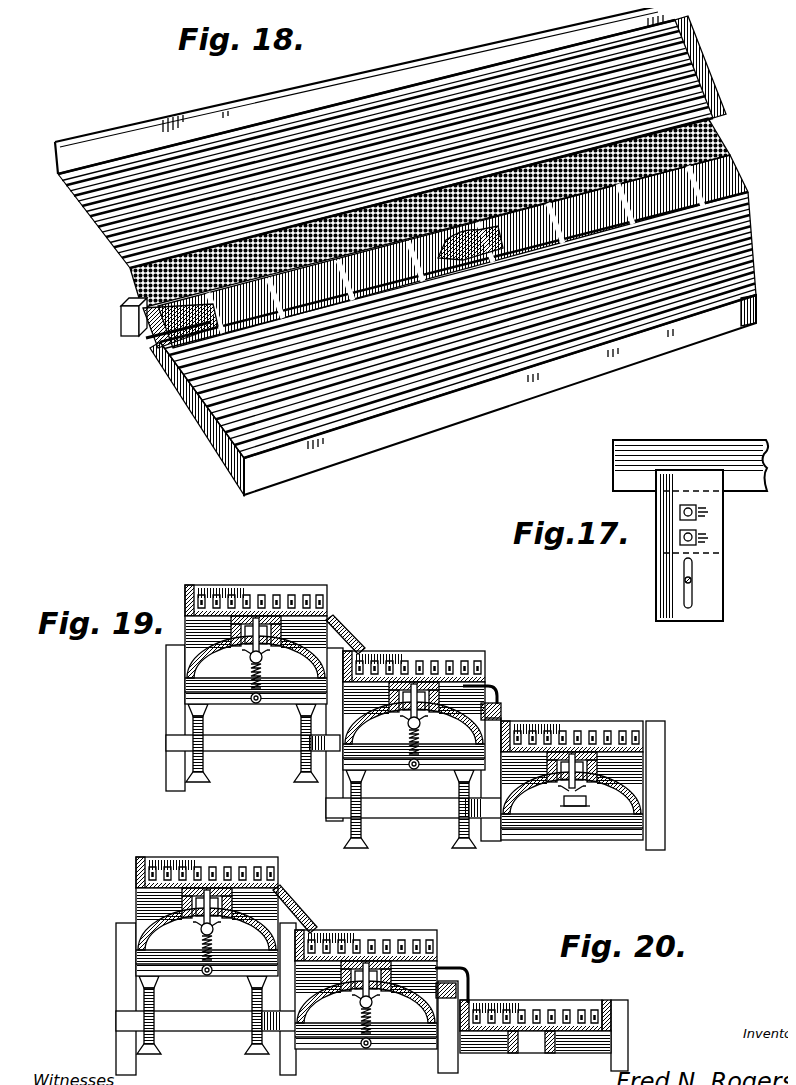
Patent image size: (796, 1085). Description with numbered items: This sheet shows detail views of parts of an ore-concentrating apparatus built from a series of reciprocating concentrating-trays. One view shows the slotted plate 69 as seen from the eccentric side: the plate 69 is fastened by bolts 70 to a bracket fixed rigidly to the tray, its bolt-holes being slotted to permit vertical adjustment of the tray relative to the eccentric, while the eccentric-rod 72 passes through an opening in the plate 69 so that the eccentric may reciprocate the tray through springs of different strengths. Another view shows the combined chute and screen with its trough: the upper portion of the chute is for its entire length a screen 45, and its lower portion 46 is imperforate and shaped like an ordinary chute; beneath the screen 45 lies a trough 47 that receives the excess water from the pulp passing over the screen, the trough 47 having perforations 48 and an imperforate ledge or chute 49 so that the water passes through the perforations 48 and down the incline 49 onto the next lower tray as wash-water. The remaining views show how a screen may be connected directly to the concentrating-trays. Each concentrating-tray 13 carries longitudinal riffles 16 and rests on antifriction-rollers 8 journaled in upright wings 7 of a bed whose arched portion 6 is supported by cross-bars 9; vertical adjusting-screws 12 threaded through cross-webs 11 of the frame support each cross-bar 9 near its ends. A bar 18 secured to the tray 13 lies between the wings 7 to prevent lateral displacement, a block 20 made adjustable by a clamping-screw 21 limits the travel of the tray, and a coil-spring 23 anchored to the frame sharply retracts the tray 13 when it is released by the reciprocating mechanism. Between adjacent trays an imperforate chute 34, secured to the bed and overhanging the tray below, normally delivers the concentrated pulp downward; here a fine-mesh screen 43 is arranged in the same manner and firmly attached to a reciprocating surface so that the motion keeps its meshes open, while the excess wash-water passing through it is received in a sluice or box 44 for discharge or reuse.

In FIG. 19, the arched portion 6 is at (181, 672).
In FIG. 20, the arched portion 6 is at (131, 935).
In FIG. 19, the upright wings 7 is at (178, 628).
In FIG. 20, the upright wings 7 is at (585, 1046).
In FIG. 19, the antifriction-rollers 8 is at (620, 751).
In FIG. 20, the antifriction-rollers 8 is at (129, 897).
In FIG. 19, the cross-bars 9 is at (225, 688).
In FIG. 20, the cross-bars 9 is at (176, 970).
In FIG. 19, the cross-webs 11 is at (240, 740).
In FIG. 20, the cross-webs 11 is at (198, 1022).
In FIG. 19, the vertical adjusting-screws 12 is at (185, 715).
In FIG. 20, the vertical adjusting-screws 12 is at (140, 1028).
In FIG. 18, the concentrating-tray 13 is at (163, 112).
In FIG. 17, the concentrating-tray 13 is at (718, 447).
In FIG. 19, the concentrating-tray 13 is at (290, 591).
In FIG. 20, the concentrating-tray 13 is at (150, 856).
In FIG. 18, the riffles 16 is at (385, 115).
In FIG. 19, the riffles 16 is at (253, 592).
In FIG. 20, the riffles 16 is at (216, 876).
In FIG. 19, the bar 18 is at (398, 717).
In FIG. 20, the bar 18 is at (358, 1003).
In FIG. 19, the block 20 is at (585, 796).
In FIG. 20, the block 20 is at (305, 959).
In FIG. 19, the clamping-screw 21 is at (562, 792).
In FIG. 19, the coil-spring 23 is at (349, 730).
In FIG. 20, the coil-spring 23 is at (368, 1059).
In FIG. 19, the chute 34 is at (338, 634).
In FIG. 20, the chute 34 is at (290, 902).
In FIG. 19, the screen 43 is at (487, 692).
In FIG. 20, the screen 43 is at (450, 968).
In FIG. 19, the sluice or box 44 is at (495, 703).
In FIG. 20, the sluice or box 44 is at (450, 981).
In FIG. 18, the screen 45 is at (707, 110).
In FIG. 18, the imperforate portion 46 is at (700, 172).
In FIG. 18, the trough 47 is at (113, 313).
In FIG. 18, the perforations 48 is at (432, 244).
In FIG. 18, the imperforate ledge or chute 49 is at (146, 376).
In FIG. 17, the plate 69 is at (705, 562).
In FIG. 17, the bolts 70 is at (690, 529).
In FIG. 17, the eccentric-rod 72 is at (678, 572).